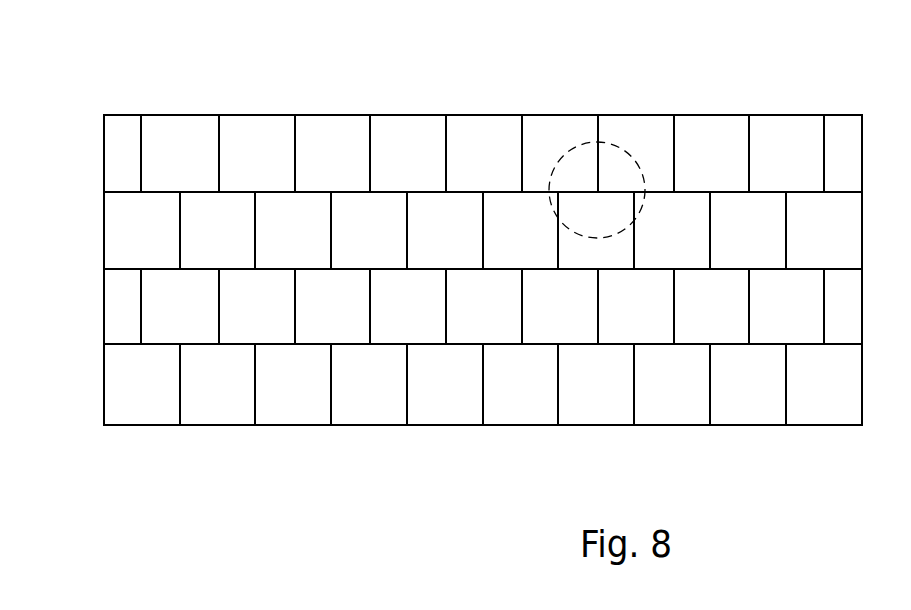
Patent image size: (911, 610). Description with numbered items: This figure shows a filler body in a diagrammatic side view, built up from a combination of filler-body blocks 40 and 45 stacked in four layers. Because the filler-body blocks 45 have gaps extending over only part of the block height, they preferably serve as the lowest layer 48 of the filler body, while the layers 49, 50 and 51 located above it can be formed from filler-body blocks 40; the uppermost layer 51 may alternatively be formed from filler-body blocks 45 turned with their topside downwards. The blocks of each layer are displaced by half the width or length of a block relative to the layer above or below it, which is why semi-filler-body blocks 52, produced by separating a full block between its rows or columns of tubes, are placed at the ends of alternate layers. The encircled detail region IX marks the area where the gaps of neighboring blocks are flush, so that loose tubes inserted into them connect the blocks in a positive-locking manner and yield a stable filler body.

The filler-body block 40 is at (197, 298).
The filler-body block 45 is at (216, 398).
The lowest layer 48 is at (97, 393).
The layer 49 is at (97, 307).
The layer 50 is at (97, 233).
The uppermost layer 51 is at (97, 158).
The semi-filler-body block 52 is at (121, 137).
The detail region IX is at (617, 145).